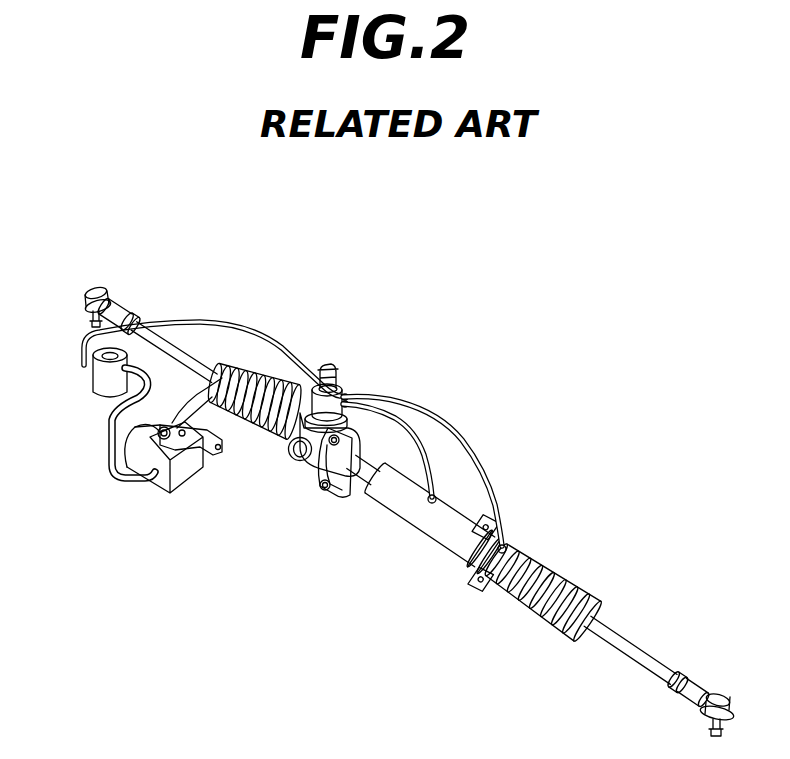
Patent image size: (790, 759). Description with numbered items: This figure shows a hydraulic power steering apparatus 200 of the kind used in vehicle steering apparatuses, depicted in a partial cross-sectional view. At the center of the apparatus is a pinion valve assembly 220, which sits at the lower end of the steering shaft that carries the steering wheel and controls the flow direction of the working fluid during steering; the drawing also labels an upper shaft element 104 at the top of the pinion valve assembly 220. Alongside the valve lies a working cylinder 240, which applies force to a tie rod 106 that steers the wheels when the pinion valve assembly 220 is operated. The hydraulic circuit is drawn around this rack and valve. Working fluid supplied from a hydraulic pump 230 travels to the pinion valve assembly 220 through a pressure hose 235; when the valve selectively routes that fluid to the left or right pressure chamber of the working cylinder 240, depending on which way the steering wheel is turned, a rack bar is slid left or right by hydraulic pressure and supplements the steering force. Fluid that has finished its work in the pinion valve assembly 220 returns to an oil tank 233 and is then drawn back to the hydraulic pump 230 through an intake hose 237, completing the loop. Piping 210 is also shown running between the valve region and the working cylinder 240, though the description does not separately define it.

The pinion input shaft 104 is at (327, 367).
The tie rod 106 is at (623, 637).
The hydraulic power steering apparatus 200 is at (385, 510).
The hydraulic pipe 210 is at (410, 417).
The pinion valve assembly 220 is at (340, 388).
The hydraulic pump 230 is at (147, 470).
The oil tank 233 is at (107, 383).
The pressure hose 235 is at (207, 427).
The intake hose 237 is at (103, 460).
The working cylinder 240 is at (458, 539).